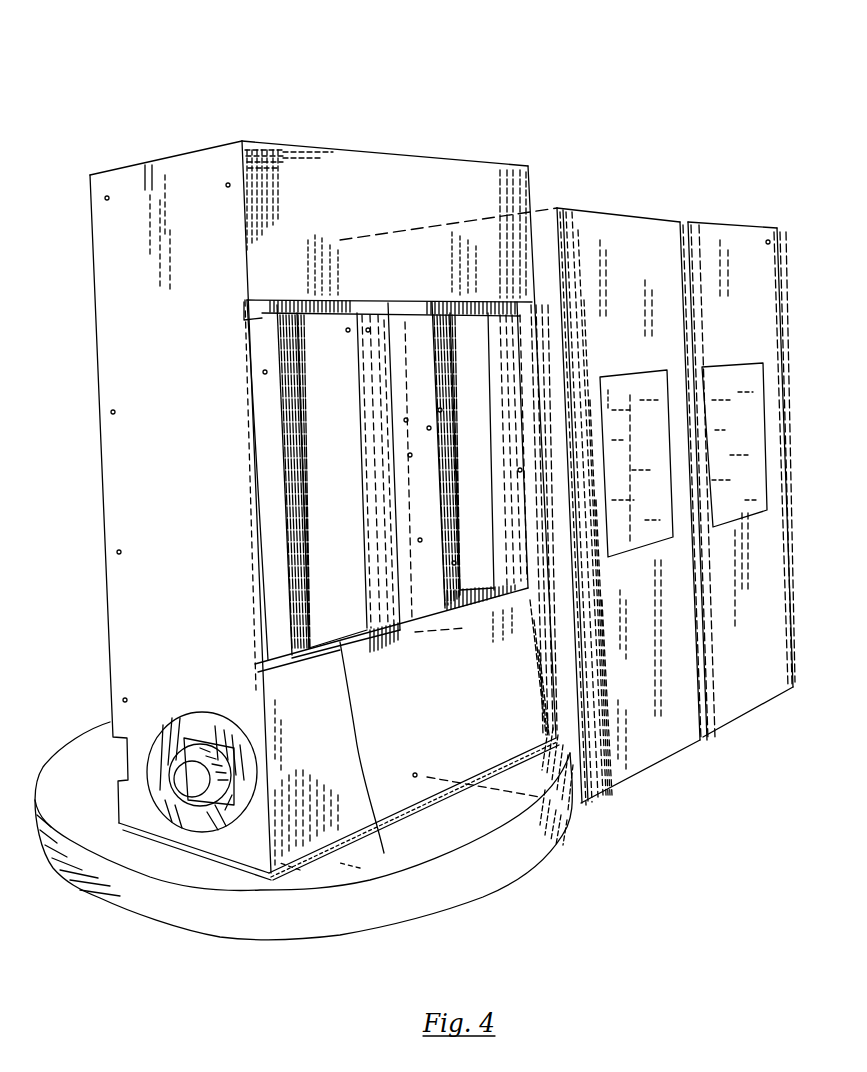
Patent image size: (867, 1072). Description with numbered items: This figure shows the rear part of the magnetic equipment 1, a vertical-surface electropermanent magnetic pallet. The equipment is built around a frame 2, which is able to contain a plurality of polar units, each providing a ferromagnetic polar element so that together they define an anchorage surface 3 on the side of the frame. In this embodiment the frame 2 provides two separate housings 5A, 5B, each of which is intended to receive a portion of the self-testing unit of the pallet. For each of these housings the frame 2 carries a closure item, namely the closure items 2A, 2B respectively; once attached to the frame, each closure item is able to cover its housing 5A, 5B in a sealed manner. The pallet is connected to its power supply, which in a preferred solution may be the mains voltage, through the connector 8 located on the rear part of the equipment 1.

The magnetic equipment 1 is at (528, 107).
The frame 2 is at (188, 146).
The closure item 2A is at (641, 777).
The closure item 2B is at (740, 716).
The anchorage surface 3 is at (104, 480).
The housing 5A is at (384, 853).
The housing 5B is at (492, 348).
The connector 8 is at (181, 800).